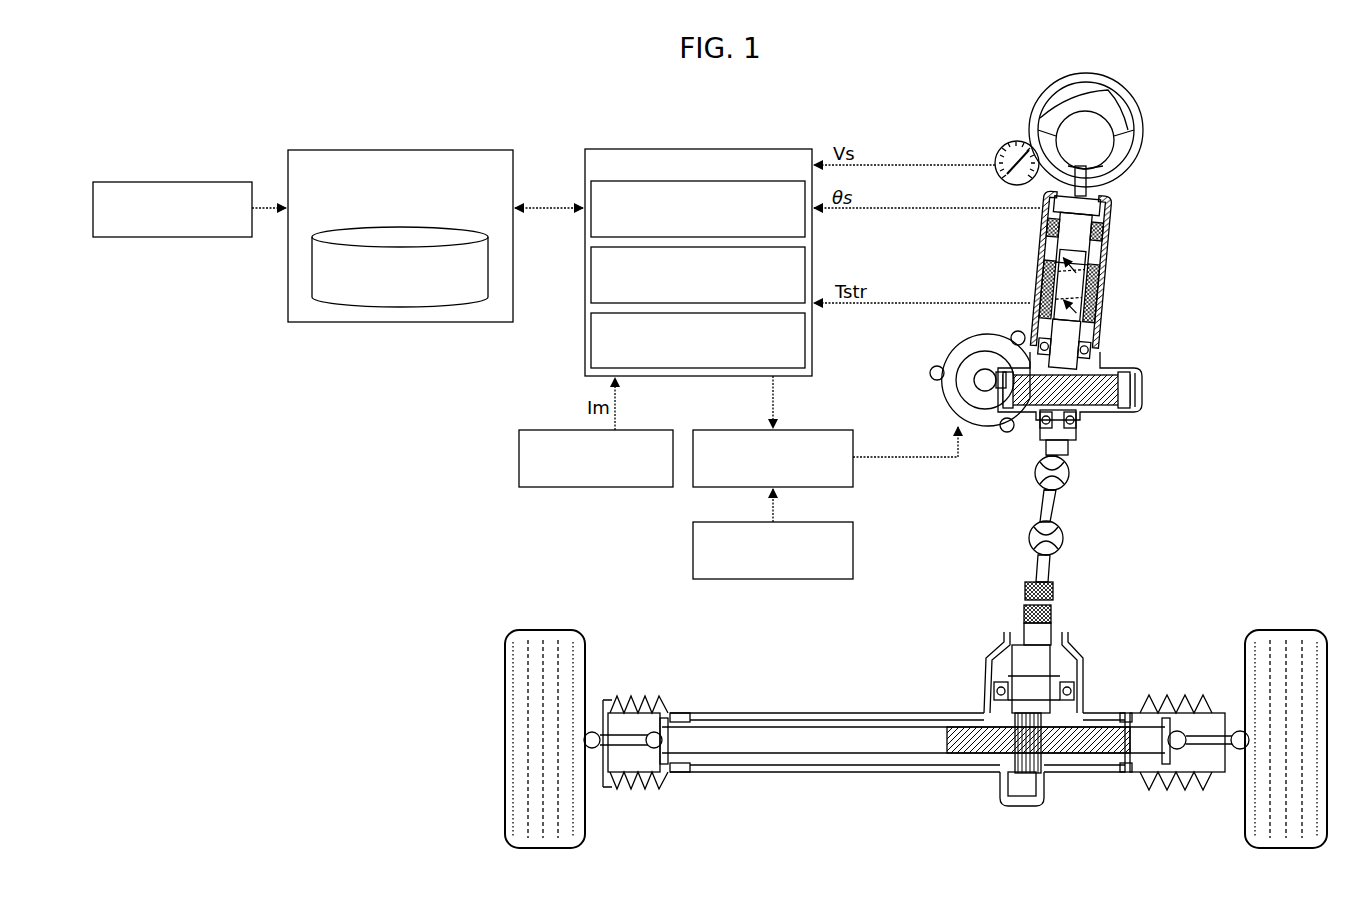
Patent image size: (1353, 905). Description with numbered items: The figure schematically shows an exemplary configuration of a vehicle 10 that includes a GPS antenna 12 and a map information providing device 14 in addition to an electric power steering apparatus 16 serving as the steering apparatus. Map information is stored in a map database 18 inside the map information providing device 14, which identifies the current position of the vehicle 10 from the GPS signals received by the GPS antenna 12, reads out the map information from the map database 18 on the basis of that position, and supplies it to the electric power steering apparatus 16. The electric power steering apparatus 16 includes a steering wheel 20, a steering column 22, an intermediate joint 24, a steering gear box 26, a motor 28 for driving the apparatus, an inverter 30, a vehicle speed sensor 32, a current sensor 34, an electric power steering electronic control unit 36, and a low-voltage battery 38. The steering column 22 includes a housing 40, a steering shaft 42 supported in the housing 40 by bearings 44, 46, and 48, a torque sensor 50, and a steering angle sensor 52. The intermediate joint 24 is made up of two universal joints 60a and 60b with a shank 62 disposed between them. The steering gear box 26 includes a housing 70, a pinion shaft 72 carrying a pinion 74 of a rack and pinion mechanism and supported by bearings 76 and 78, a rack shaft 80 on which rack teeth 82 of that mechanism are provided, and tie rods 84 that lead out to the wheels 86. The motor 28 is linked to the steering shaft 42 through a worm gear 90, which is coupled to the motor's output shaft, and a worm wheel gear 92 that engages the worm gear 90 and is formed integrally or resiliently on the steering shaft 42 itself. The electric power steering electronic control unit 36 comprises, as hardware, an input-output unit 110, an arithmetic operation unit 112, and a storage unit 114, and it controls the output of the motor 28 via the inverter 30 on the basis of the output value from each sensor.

The vehicle 10 is at (1193, 164).
The GPS antenna 12 is at (216, 182).
The map information providing device 14 is at (327, 150).
The electric power steering apparatus 16 is at (1205, 190).
The map database 18 is at (340, 297).
The steering wheel 20 is at (1040, 108).
The steering column 22 is at (1100, 238).
The intermediate joint 24 is at (1140, 509).
The steering gear box 26 is at (748, 776).
The motor 28 is at (955, 410).
The inverter 30 is at (835, 430).
The vehicle speed sensor 32 is at (1003, 146).
The current sensor 34 is at (519, 440).
The electric power steering electronic control unit 36 is at (603, 152).
The low-voltage battery 38 is at (853, 533).
The housing 40 is at (1132, 412).
The steering shaft 42 is at (1076, 325).
The bearing 44 is at (1033, 228).
The bearing 46 is at (1088, 348).
The bearing 48 is at (1078, 424).
The torque sensor 50 is at (1090, 310).
The steering angle sensor 52 is at (1085, 210).
The universal joint 60a is at (1067, 477).
The universal joint 60b is at (1064, 537).
The shank 62 is at (1054, 505).
The housing 70 is at (872, 770).
The pinion shaft 72 is at (1052, 613).
The pinion 74 is at (1026, 796).
The bearing 76 is at (990, 693).
The bearing 78 is at (1002, 786).
The rack shaft 80 is at (827, 750).
The rack teeth 82 is at (1078, 755).
The tie rods 84 is at (646, 760).
The wheel 86 is at (513, 662).
The worm gear 90 is at (975, 380).
The worm wheel gear 92 is at (1130, 393).
The input-output unit 110 is at (598, 193).
The arithmetic operation unit 112 is at (598, 258).
The storage unit 114 is at (598, 323).